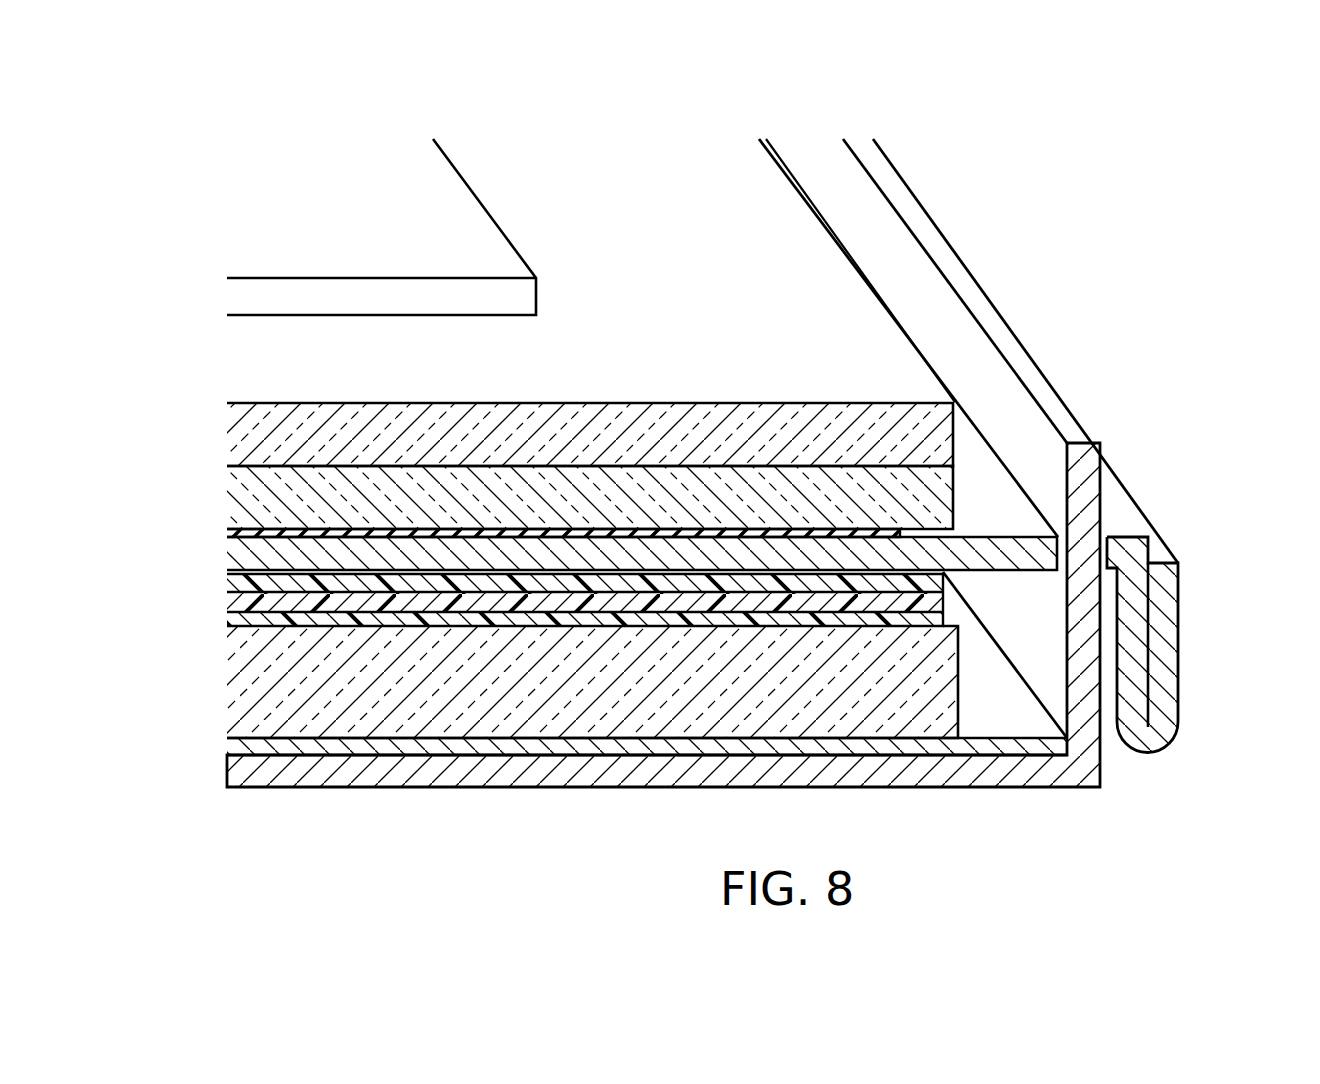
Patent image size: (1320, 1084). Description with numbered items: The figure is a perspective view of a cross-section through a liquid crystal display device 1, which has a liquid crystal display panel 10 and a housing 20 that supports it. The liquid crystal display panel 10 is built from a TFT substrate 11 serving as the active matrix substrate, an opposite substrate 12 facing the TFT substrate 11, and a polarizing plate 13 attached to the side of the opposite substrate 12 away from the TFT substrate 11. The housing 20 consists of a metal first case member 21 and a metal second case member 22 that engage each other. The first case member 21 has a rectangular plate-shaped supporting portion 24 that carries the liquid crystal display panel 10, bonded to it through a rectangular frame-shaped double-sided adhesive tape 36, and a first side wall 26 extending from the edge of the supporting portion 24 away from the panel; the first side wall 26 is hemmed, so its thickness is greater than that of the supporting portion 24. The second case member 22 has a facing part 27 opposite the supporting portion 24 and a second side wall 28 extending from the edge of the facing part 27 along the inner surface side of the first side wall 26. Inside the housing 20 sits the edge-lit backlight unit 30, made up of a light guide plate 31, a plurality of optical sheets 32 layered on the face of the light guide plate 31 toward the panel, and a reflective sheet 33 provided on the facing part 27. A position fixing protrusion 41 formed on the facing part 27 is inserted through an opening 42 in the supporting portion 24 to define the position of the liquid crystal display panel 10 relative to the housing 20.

The liquid crystal display device 1 is at (588, 105).
The liquid crystal display panel 10 is at (966, 443).
The TFT substrate 11 is at (240, 497).
The opposite substrate 12 is at (240, 437).
The polarizing plate 13 is at (240, 296).
The housing 20 is at (1190, 594).
The first case member 21 is at (1187, 753).
The second case member 22 is at (928, 799).
The supporting portion 24 is at (1012, 548).
The first side wall 26 is at (1180, 632).
The facing part 27 is at (825, 775).
The second side wall 28 is at (1088, 678).
The backlight unit 30 is at (976, 714).
The light guide plate 31 is at (240, 680).
The optical sheets 32 is at (228, 616).
The reflective sheet 33 is at (230, 748).
The double-sided adhesive tape 36 is at (230, 533).
The position fixing protrusion 41 is at (1058, 405).
The opening 42 is at (1108, 548).